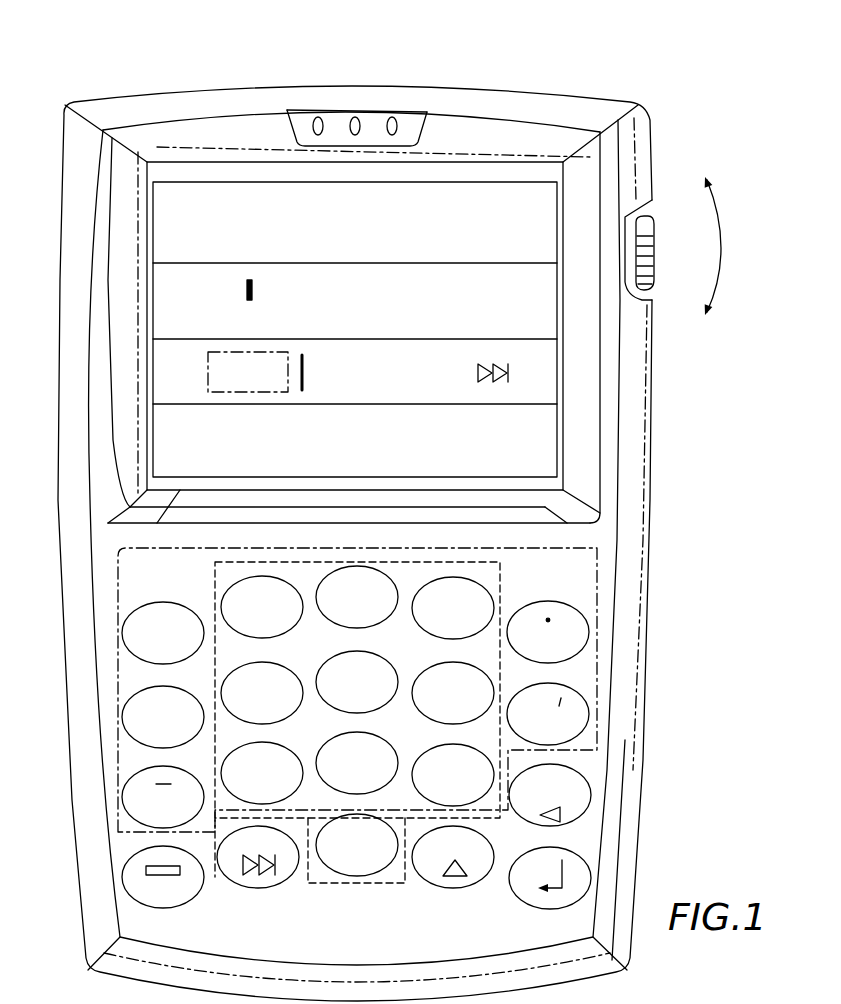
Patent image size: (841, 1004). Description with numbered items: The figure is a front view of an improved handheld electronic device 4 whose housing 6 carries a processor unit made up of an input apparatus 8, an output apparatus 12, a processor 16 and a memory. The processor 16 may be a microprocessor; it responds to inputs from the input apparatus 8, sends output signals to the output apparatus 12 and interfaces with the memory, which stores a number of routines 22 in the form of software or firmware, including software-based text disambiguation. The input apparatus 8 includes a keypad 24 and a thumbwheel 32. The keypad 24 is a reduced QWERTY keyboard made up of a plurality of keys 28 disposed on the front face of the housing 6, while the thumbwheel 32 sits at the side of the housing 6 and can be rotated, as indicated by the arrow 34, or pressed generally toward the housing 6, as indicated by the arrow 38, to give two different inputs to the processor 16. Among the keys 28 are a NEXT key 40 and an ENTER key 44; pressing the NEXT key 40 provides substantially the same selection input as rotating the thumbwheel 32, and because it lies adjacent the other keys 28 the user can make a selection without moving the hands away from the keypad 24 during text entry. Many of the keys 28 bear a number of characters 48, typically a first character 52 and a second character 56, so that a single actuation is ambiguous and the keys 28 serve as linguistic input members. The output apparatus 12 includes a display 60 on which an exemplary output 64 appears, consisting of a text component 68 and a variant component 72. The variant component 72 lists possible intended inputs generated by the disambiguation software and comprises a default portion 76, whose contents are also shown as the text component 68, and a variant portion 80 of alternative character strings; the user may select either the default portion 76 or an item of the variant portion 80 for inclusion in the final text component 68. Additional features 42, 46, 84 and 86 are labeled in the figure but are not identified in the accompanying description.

The handheld electronic device 4 is at (670, 92).
The housing 6 is at (532, 95).
The input apparatus 8 is at (622, 540).
The output apparatus 12 is at (427, 148).
The processor 16 is at (102, 577).
The routines 22 is at (98, 540).
The keypad 24 is at (600, 685).
The keys 28 is at (231, 592).
The thumbwheel 32 is at (650, 237).
The arrow 34 is at (727, 227).
The arrow 38 is at (717, 252).
The NEXT key 40 is at (257, 876).
The NEXT key symbol 42 is at (238, 880).
The ENTER key 44 is at (574, 907).
The NEXT indicator 46 is at (477, 370).
The characters 48 is at (148, 740).
The first character 52 is at (152, 720).
The second character 56 is at (177, 716).
The display 60 is at (495, 212).
The output 64 is at (392, 227).
The text component 68 is at (202, 302).
The variant component 72 is at (356, 367).
The default portion 76 is at (250, 388).
The variant portion 80 is at (350, 388).
The cursor 84 is at (250, 290).
The DELETE key 86 is at (580, 818).